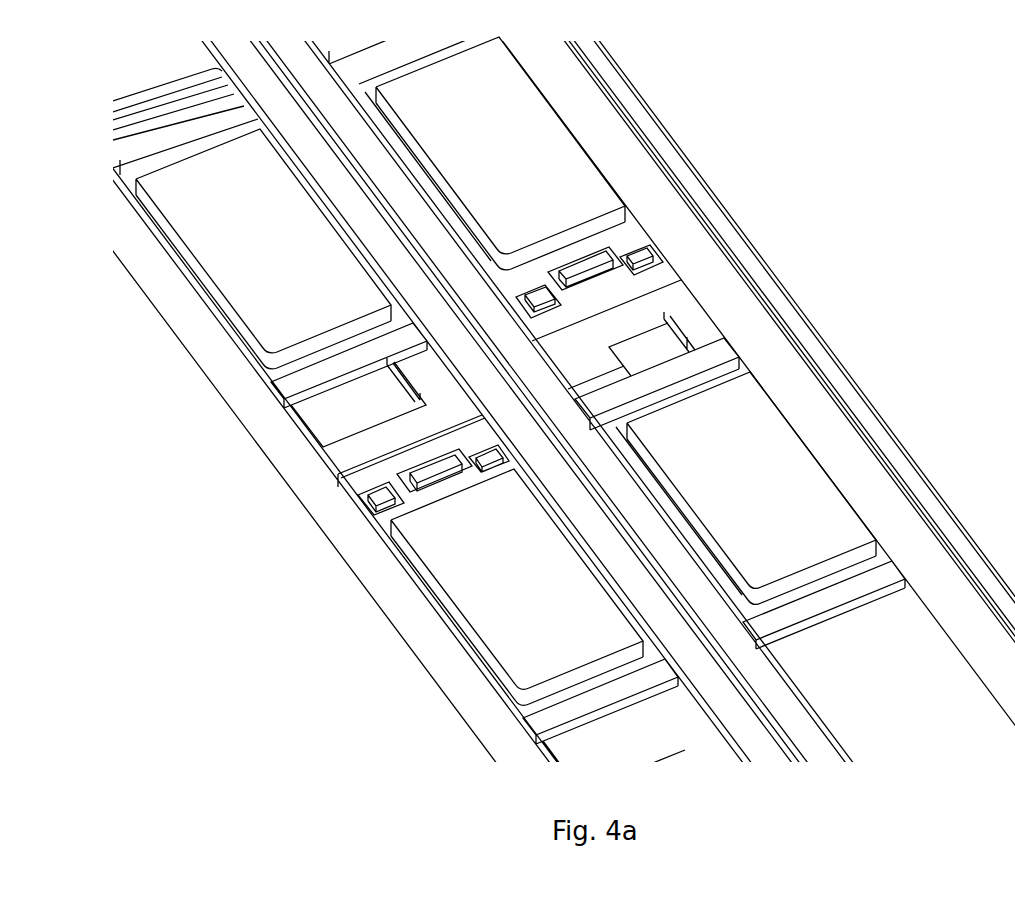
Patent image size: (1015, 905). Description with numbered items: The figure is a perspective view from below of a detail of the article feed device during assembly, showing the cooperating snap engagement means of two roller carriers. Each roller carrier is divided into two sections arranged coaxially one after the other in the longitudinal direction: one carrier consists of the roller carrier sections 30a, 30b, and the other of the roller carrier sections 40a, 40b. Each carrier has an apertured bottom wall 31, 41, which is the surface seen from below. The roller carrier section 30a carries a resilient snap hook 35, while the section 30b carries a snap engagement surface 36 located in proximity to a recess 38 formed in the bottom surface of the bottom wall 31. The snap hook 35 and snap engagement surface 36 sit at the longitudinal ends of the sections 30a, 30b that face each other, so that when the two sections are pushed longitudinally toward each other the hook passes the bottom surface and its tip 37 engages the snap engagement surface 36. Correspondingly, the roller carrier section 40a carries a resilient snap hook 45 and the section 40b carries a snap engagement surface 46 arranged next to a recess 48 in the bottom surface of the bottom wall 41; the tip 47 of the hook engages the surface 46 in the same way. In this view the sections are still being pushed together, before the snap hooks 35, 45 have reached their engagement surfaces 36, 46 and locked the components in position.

The roller carrier section 30a is at (335, 322).
The roller carrier section 30b is at (585, 668).
The roller carrier section 40a is at (730, 547).
The roller carrier section 40b is at (437, 75).
The bottom wall 31 is at (378, 488).
The snap hook 35 is at (398, 382).
The snap engagement surface 36 is at (448, 490).
The tip 37 is at (416, 388).
The recess 38 is at (420, 500).
The bottom wall 41 is at (635, 242).
The snap hook 45 is at (692, 348).
The snap engagement surface 46 is at (572, 250).
The tip 47 is at (672, 333).
The recess 48 is at (558, 300).